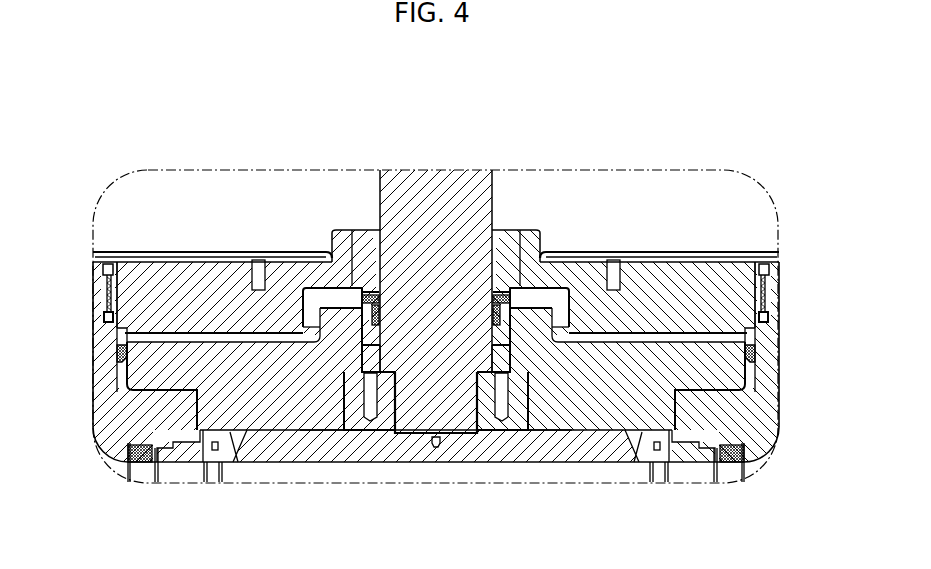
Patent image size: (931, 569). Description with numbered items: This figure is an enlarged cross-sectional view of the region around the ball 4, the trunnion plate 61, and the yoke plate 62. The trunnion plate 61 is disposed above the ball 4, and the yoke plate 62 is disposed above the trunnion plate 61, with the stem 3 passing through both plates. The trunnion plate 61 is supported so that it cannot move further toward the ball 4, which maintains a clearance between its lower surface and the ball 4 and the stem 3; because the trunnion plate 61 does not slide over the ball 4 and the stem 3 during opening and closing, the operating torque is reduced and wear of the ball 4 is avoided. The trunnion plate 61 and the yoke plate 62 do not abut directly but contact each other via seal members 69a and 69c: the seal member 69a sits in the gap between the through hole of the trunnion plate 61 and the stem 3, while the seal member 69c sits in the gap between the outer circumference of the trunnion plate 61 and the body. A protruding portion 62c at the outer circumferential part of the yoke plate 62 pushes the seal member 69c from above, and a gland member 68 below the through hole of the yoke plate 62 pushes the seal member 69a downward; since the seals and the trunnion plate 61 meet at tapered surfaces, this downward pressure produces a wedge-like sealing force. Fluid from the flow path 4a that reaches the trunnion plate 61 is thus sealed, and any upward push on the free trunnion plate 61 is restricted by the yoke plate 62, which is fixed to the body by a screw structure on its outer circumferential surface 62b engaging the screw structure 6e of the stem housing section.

The stem 3 is at (475, 177).
The ball 4 is at (592, 458).
The flow path 4a is at (536, 464).
The screw structure 6e is at (108, 284).
The trunnion plate 61 is at (245, 405).
The yoke plate 62 is at (127, 296).
The outer circumferential surface 62b is at (125, 278).
The protruding portion 62c is at (125, 339).
The gland member 68 is at (370, 292).
The seal member 69a is at (373, 318).
The seal member 69c is at (125, 358).